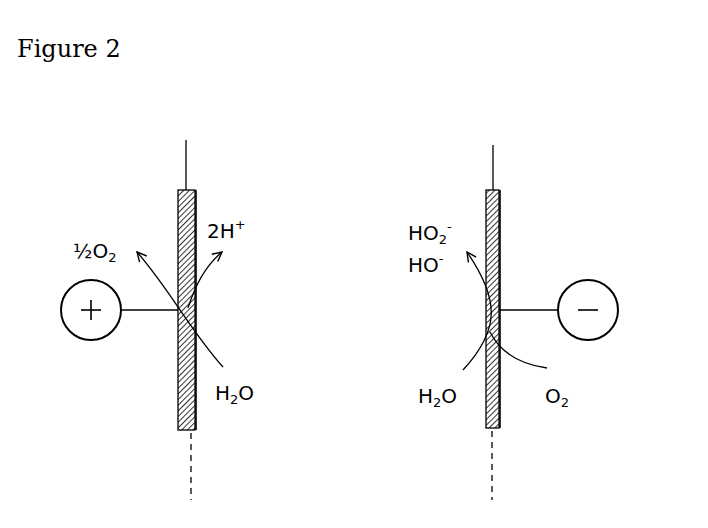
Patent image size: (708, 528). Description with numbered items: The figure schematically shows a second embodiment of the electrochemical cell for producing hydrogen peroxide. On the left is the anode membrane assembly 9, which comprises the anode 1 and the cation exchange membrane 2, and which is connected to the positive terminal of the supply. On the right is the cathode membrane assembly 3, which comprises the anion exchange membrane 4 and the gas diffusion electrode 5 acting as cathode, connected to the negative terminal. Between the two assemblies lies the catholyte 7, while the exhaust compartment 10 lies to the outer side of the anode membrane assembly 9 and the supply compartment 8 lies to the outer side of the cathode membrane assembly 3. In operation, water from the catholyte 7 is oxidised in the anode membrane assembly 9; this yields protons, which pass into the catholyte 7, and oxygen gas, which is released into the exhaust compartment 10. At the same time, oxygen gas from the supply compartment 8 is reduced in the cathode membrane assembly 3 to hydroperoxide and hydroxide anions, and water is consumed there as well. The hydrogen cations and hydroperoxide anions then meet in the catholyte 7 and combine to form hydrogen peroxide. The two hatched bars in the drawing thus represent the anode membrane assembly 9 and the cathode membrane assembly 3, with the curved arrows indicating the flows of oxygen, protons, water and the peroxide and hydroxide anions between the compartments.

The anode 1 is at (178, 217).
The cation exchange membrane 2 is at (196, 205).
The cathode membrane assembly 3 is at (492, 146).
The anion exchange membrane 4 is at (486, 203).
The gas diffusion electrode 5 is at (500, 214).
The catholyte 7 is at (343, 468).
The supply compartment 8 is at (582, 470).
The anode membrane assembly 9 is at (187, 151).
The exhaust compartment 10 is at (103, 470).